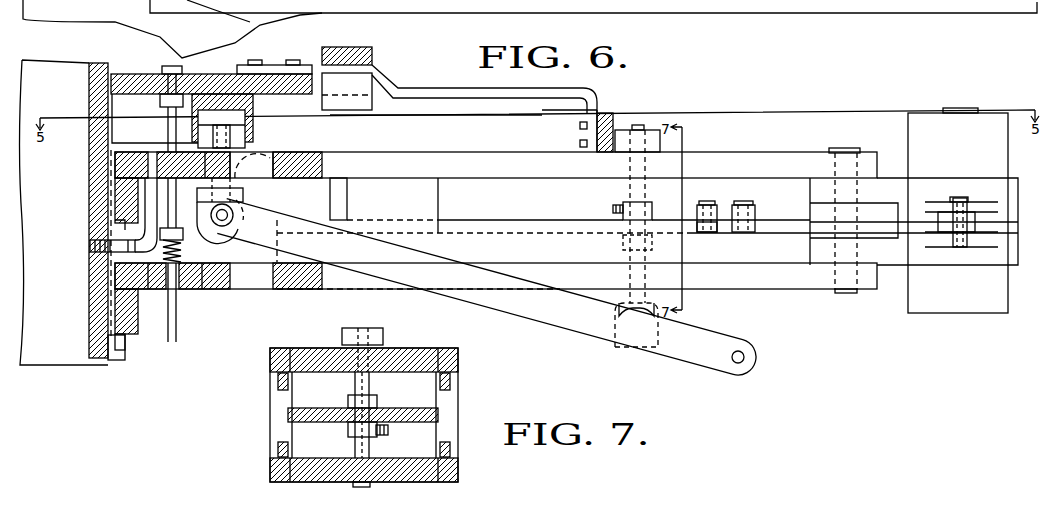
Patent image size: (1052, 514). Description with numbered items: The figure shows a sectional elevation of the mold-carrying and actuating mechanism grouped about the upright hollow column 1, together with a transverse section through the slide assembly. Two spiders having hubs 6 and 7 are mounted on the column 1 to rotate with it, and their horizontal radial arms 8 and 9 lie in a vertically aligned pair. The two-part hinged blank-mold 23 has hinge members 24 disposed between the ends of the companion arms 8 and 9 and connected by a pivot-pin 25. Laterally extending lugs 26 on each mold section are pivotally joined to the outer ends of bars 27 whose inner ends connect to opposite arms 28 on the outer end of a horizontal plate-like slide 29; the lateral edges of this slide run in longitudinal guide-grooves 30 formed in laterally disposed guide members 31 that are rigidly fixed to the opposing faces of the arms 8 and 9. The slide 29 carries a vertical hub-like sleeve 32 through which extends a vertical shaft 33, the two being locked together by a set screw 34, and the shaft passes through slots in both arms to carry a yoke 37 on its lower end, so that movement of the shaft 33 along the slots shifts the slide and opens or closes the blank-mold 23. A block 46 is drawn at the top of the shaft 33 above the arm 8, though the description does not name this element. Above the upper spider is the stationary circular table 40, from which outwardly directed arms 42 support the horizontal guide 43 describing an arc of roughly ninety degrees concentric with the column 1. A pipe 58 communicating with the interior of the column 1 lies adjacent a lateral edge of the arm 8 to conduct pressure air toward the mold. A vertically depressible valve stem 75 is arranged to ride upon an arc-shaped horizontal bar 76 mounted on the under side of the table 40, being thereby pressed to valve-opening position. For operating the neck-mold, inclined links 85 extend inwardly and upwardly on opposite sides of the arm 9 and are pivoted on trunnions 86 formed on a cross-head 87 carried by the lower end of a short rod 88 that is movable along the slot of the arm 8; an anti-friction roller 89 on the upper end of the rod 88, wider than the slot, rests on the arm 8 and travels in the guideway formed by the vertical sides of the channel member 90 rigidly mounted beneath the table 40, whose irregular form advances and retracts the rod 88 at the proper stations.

In FIG. 6, the upright hollow standard or column 1 is at (30, 197).
In FIG. 6, the hub 6 is at (115, 192).
In FIG. 6, the hub 7 is at (120, 311).
In FIG. 6, the horizontal radial arm 8 is at (746, 165).
In FIG. 7, the horizontal radial arm 8 is at (315, 352).
In FIG. 6, the horizontal radial arm 9 is at (736, 285).
In FIG. 7, the horizontal radial arm 9 is at (275, 467).
In FIG. 6, the blank-mold 23 is at (950, 310).
In FIG. 6, the hinge member 24 is at (815, 208).
In FIG. 6, the pivot-pin 25 is at (847, 293).
In FIG. 6, the laterally extending lug 26 is at (940, 247).
In FIG. 6, the bar 27 is at (794, 233).
In FIG. 6, the laterally extending arm 28 is at (722, 212).
In FIG. 6, the horizontal plate-like slide 29 is at (698, 232).
In FIG. 7, the horizontal plate-like slide 29 is at (338, 418).
In FIG. 6, the longitudinal guide-groove or channel 30 is at (432, 220).
In FIG. 7, the longitudinal guide-groove or channel 30 is at (290, 425).
In FIG. 6, the guide member 31 is at (523, 225).
In FIG. 7, the guide member 31 is at (285, 420).
In FIG. 6, the hub-like sleeve 32 is at (651, 215).
In FIG. 7, the hub-like sleeve 32 is at (377, 402).
In FIG. 6, the vertical shaft or rod 33 is at (630, 190).
In FIG. 7, the vertical shaft or rod 33 is at (355, 384).
In FIG. 6, the set screw 34 is at (612, 208).
In FIG. 7, the set screw 34 is at (388, 432).
In FIG. 6, the yoke 37 is at (618, 338).
In FIG. 6, the circular table 40 is at (266, 78).
In FIG. 6, the outwardly directed arm 42 is at (441, 95).
In FIG. 6, the horizontal guide 43 is at (613, 113).
In FIG. 6, the bearing block 46 is at (652, 131).
In FIG. 7, the bearing block 46 is at (383, 336).
In FIG. 6, the pipe 58 is at (120, 248).
In FIG. 6, the vertically depressible stem 75 is at (178, 318).
In FIG. 6, the arc-shaped horizontal bar 76 is at (166, 100).
In FIG. 6, the inclined link 85 is at (533, 316).
In FIG. 6, the trunnion 86 is at (235, 214).
In FIG. 6, the cross-head 87 is at (244, 195).
In FIG. 6, the short rod 88 is at (276, 156).
In FIG. 6, the anti-friction roller 89 is at (242, 137).
In FIG. 6, the channel member 90 is at (192, 117).